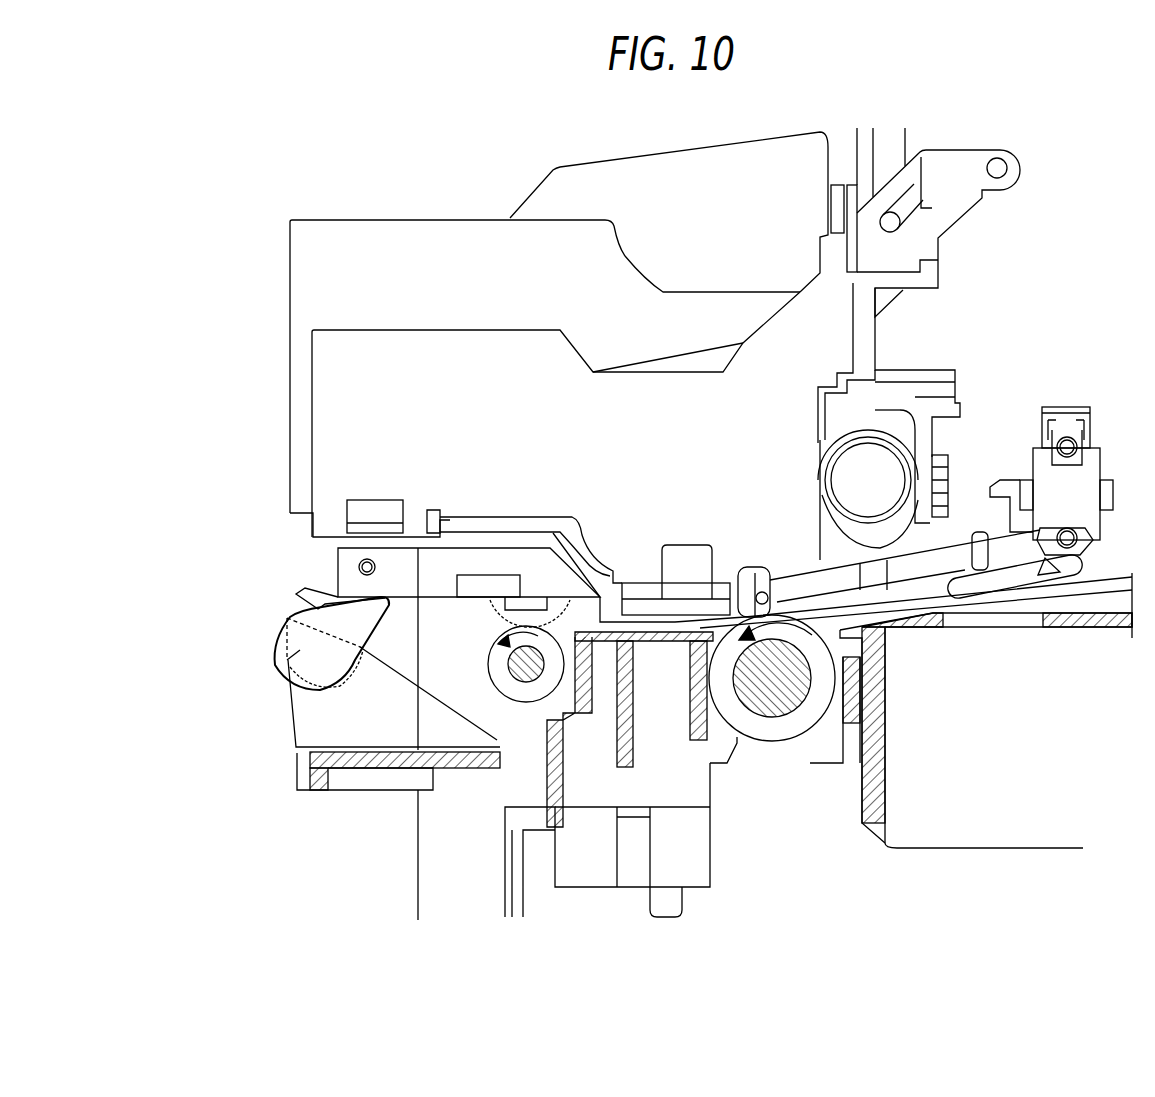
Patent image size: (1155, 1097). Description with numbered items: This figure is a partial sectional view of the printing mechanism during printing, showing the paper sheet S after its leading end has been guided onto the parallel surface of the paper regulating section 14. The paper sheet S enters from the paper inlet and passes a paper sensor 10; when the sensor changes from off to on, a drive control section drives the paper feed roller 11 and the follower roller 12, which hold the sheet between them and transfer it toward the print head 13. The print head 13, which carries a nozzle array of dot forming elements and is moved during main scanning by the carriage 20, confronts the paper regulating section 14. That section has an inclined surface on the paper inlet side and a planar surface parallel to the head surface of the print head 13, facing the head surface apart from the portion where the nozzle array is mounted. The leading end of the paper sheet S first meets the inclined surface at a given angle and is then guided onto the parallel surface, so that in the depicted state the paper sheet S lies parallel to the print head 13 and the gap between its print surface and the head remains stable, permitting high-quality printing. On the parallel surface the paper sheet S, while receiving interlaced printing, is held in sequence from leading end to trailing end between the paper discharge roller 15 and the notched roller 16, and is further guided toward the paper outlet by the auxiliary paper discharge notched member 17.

The paper sensor 10 is at (990, 590).
The paper feed roller 11 is at (780, 742).
The follower roller 12 is at (762, 590).
The print head 13 is at (700, 555).
The paper regulating section 14 is at (640, 625).
The paper discharge roller 15 is at (507, 745).
The notched roller 16 is at (505, 592).
The auxiliary paper discharge notched member 17 is at (287, 663).
The carriage 20 is at (325, 422).
The paper sheet S is at (675, 630).